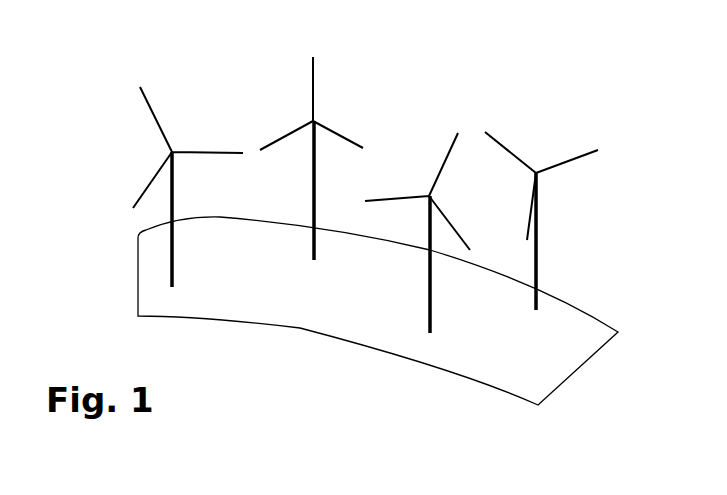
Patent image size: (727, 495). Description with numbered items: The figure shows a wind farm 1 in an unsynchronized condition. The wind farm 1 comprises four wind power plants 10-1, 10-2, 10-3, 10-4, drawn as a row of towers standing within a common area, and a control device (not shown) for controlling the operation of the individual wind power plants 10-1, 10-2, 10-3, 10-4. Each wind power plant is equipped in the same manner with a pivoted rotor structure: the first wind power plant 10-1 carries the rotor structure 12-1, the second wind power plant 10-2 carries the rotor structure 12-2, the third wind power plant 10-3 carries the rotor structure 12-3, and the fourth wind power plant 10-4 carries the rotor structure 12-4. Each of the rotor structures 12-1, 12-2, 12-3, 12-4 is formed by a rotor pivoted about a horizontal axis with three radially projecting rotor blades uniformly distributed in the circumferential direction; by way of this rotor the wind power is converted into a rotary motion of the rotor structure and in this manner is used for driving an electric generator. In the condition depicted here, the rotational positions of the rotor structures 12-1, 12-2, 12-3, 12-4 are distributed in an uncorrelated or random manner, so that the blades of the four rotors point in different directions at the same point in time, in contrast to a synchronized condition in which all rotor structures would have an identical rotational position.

The wind farm 1 is at (91, 78).
The wind power plant 10-1 is at (186, 240).
The wind power plant 10-2 is at (303, 260).
The wind power plant 10-3 is at (417, 284).
The wind power plant 10-4 is at (525, 297).
The rotor structure 12-1 is at (183, 128).
The rotor structure 12-2 is at (333, 117).
The rotor structure 12-3 is at (417, 187).
The rotor structure 12-4 is at (548, 162).